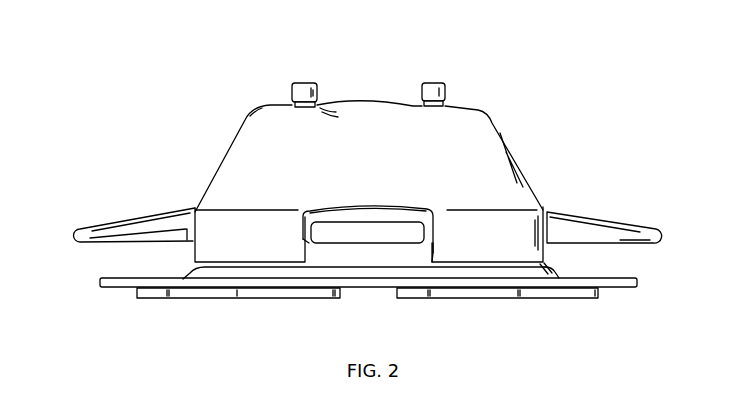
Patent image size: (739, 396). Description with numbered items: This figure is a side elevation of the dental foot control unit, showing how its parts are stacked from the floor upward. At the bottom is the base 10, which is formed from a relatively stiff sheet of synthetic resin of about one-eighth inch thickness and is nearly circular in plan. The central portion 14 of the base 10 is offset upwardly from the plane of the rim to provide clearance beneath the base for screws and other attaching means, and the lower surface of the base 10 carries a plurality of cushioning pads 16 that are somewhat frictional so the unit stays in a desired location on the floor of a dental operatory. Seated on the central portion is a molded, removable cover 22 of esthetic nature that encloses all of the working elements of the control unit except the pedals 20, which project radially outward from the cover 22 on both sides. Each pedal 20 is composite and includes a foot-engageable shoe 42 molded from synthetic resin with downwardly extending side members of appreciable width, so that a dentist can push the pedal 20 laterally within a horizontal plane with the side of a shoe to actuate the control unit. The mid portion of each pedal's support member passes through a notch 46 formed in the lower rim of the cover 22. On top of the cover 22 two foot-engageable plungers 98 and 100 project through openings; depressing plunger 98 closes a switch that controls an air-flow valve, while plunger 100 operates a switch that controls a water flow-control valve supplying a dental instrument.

The base 10 is at (113, 287).
The central portion 14 is at (535, 275).
The cushioning pads 16 is at (218, 295).
The pedals 20 is at (141, 211).
The cover 22 is at (488, 145).
The foot-engageable shoe 42 is at (105, 227).
The notch 46 is at (435, 253).
The plunger 98 is at (298, 83).
The plunger 100 is at (432, 90).